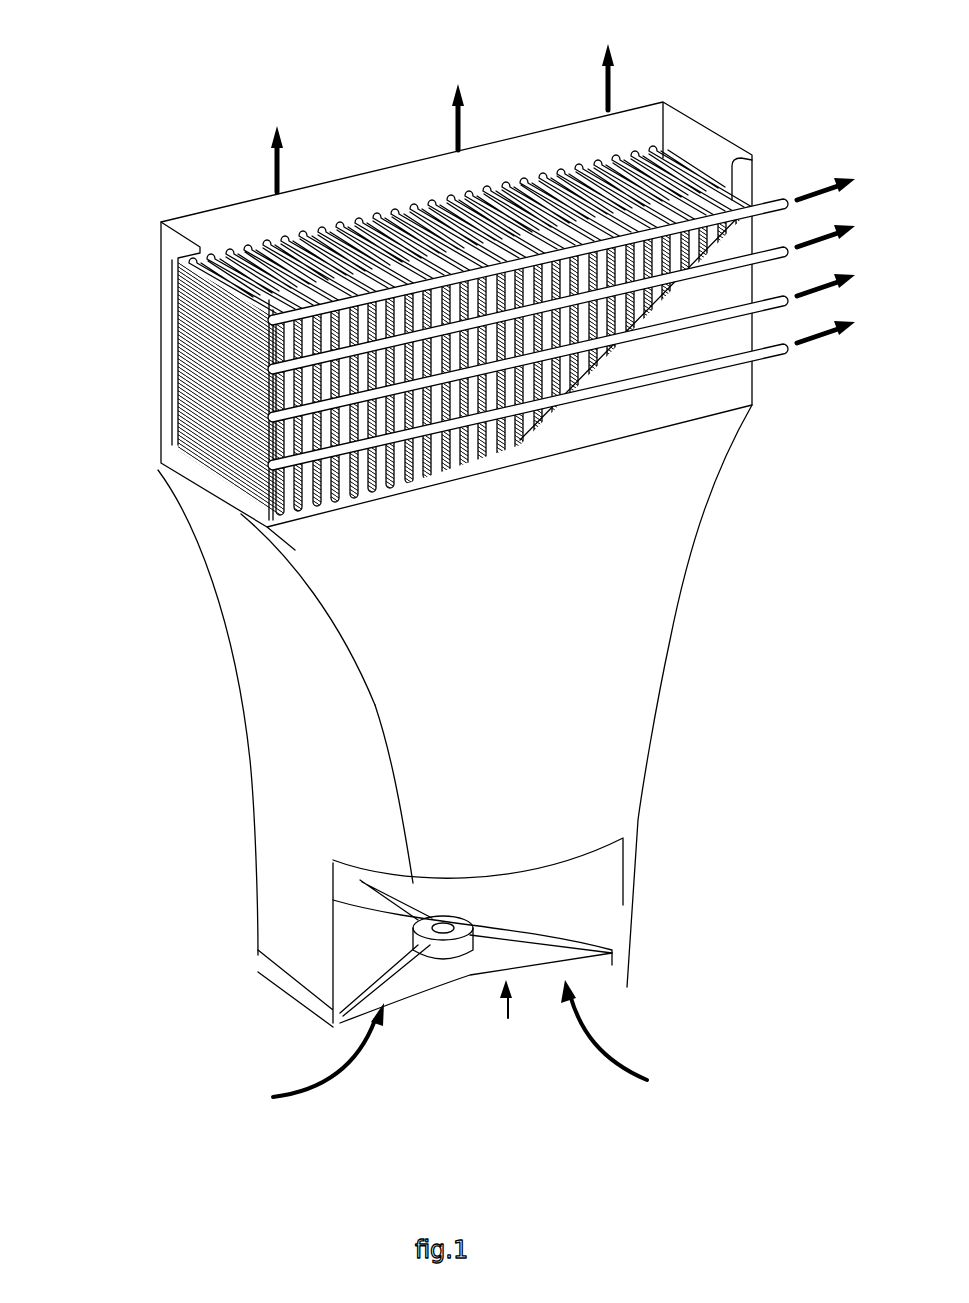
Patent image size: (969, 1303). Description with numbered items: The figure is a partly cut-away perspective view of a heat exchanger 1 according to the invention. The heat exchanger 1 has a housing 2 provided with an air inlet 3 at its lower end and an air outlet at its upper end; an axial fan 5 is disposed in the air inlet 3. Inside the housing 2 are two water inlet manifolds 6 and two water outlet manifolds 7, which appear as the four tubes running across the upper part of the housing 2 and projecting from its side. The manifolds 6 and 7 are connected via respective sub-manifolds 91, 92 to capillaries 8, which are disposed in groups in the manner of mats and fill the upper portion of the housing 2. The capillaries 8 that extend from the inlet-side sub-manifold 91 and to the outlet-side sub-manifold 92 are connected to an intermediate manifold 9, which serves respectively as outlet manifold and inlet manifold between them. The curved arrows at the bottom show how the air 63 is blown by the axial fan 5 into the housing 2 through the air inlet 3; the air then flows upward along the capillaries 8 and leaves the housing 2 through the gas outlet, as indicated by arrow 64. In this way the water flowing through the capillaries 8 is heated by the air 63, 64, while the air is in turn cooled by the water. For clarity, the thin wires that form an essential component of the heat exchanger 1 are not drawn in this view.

The heat exchanger 1 is at (183, 117).
The housing 2 is at (672, 568).
The air inlet 3 is at (509, 1024).
The axial fan 5 is at (363, 1007).
The water inlet manifold 6 is at (775, 297).
The water outlet manifold 7 is at (775, 340).
The capillaries 8 is at (175, 395).
The intermediate manifold 9 is at (175, 375).
The sub-manifold 91 is at (262, 432).
The sub-manifold 92 is at (290, 497).
The air 63 is at (590, 1057).
The arrow 64 is at (607, 90).